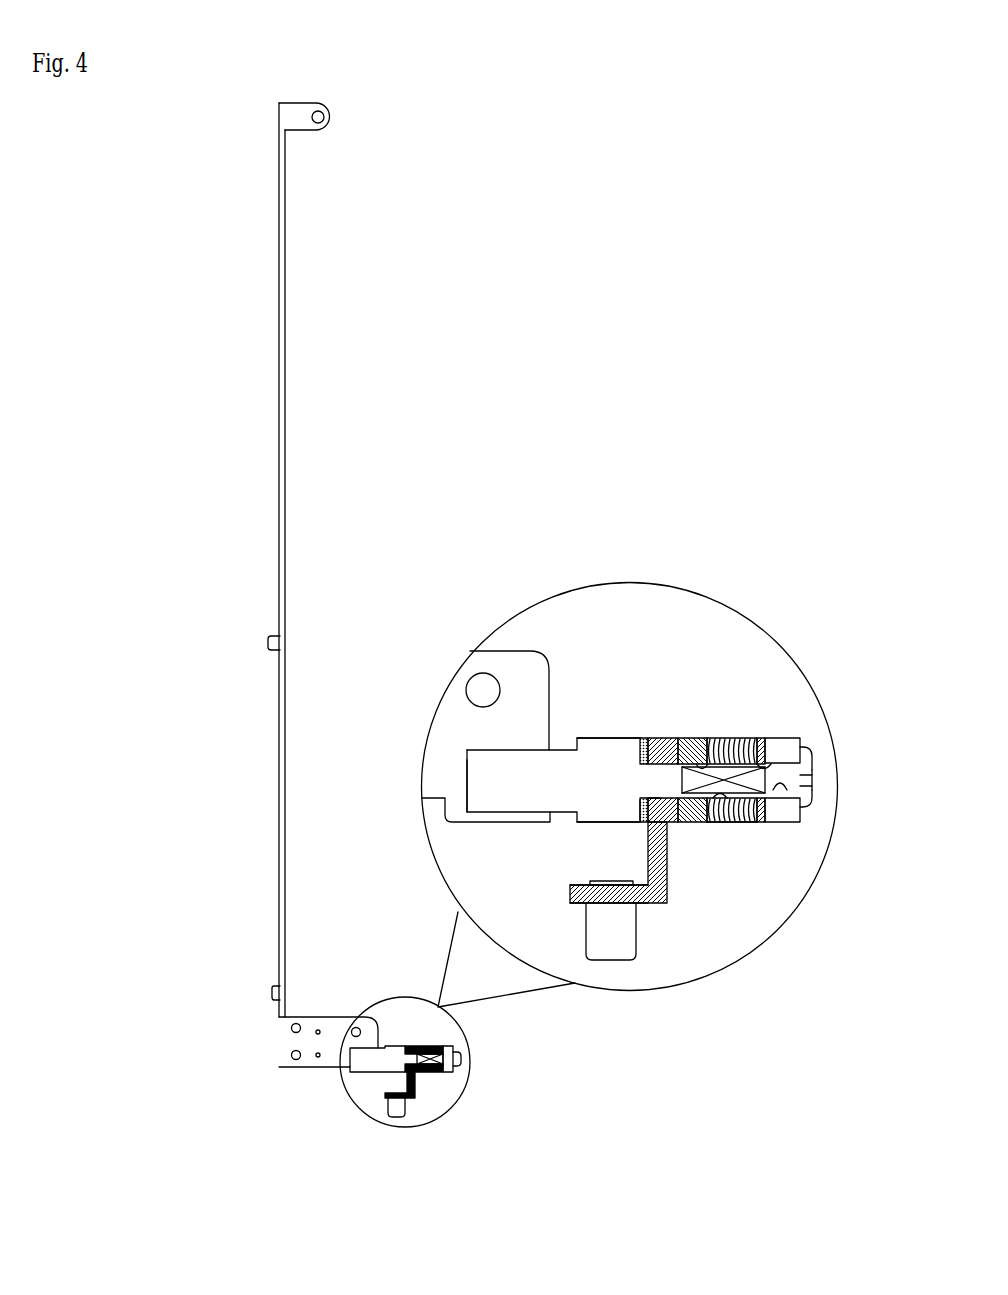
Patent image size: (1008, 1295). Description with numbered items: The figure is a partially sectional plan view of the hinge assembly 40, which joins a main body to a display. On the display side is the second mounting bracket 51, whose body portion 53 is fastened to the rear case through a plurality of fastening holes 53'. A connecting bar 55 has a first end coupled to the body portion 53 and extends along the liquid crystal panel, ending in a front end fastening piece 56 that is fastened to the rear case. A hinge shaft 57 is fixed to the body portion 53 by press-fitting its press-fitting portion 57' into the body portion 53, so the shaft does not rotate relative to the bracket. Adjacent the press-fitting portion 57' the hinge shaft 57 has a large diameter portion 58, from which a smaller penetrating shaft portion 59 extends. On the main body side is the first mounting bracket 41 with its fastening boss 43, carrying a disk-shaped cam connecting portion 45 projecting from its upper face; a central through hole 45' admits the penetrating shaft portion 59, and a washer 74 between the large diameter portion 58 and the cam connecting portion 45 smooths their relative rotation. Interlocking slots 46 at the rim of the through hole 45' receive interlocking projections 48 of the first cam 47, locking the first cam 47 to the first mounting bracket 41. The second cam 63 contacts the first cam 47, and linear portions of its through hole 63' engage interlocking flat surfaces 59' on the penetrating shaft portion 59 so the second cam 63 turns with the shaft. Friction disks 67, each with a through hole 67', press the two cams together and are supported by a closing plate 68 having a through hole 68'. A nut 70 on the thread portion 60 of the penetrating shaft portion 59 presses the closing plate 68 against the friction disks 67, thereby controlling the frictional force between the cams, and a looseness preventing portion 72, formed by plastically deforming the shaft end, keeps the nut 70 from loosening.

The hinge assembly 40 is at (218, 517).
The first mounting bracket 41 is at (567, 896).
The fastening boss 43 is at (611, 953).
The cam connecting portion 45 is at (732, 687).
The through hole 45' is at (521, 816).
The interlocking slot 46 is at (644, 738).
The first cam 47 is at (673, 822).
The interlocking projection 48 is at (662, 745).
The second mounting bracket 51 is at (254, 1046).
The body portion 53 is at (433, 854).
The fastening holes 53' is at (392, 867).
The connecting bar 55 is at (288, 448).
The front end fastening piece 56 is at (333, 117).
The hinge shaft 57 is at (591, 680).
The press-fitting portion 57' is at (497, 686).
The large diameter portion 58 is at (608, 748).
The penetrating shaft portion 59 is at (756, 888).
The interlocking flat surfaces 59' is at (852, 770).
The thread portion 60 is at (822, 768).
The second cam 63 is at (723, 926).
The through hole 63' is at (740, 668).
The friction disks 67 is at (778, 679).
The through hole 67' is at (741, 904).
The closing plate 68 is at (797, 693).
The through hole 68' is at (816, 742).
The nut 70 is at (822, 748).
The looseness preventing portion 72 is at (813, 790).
The washer 74 is at (640, 810).